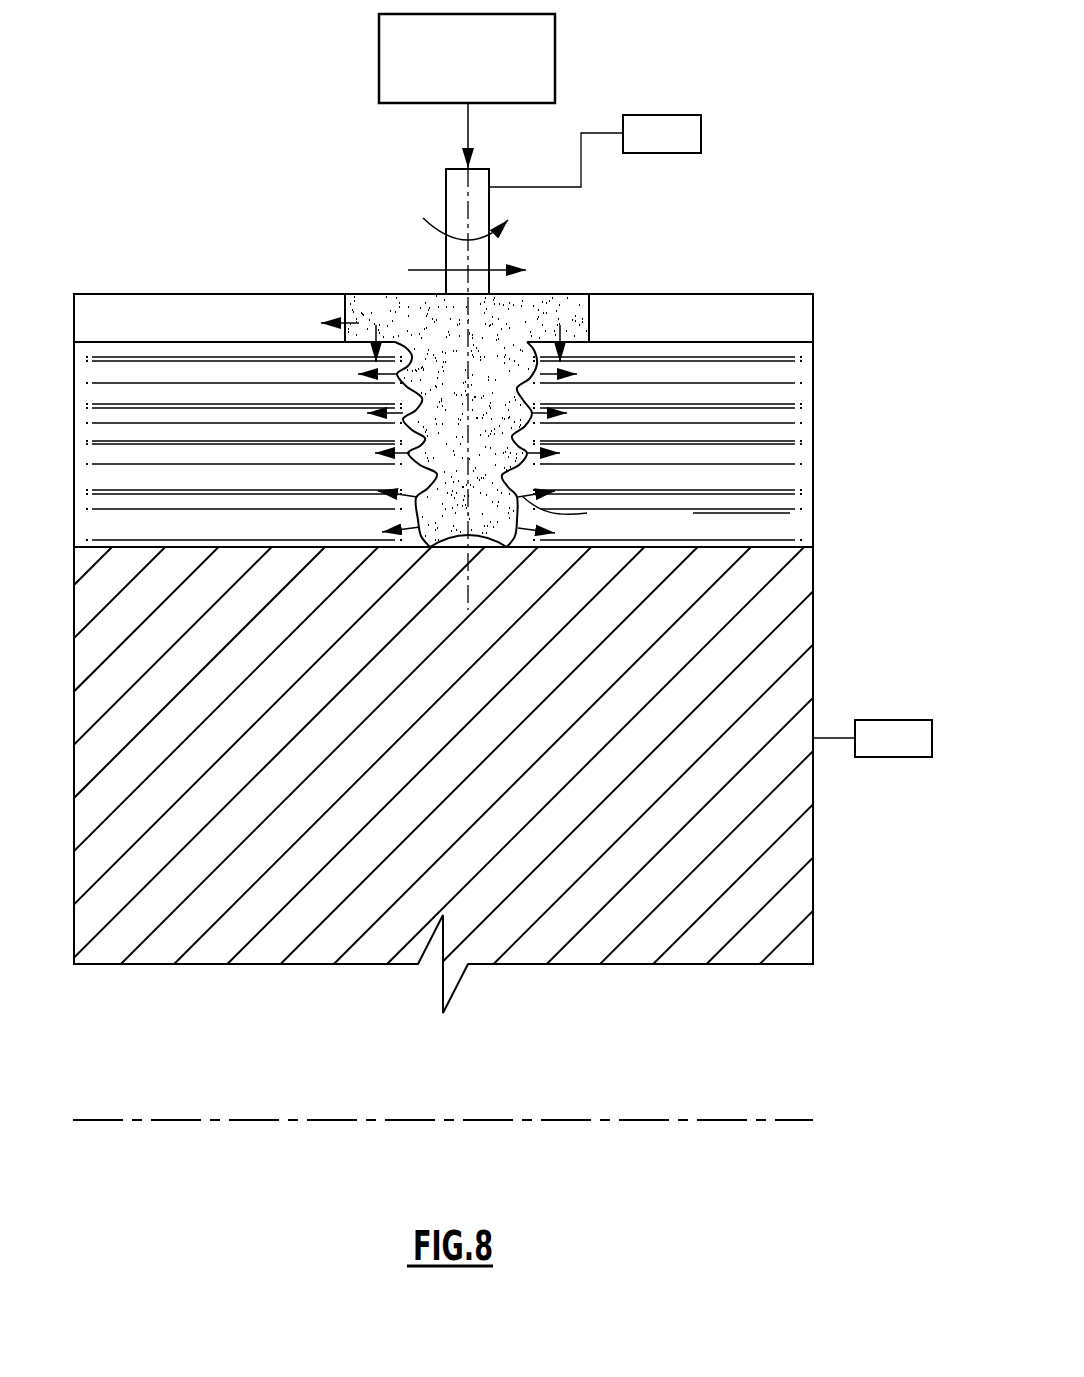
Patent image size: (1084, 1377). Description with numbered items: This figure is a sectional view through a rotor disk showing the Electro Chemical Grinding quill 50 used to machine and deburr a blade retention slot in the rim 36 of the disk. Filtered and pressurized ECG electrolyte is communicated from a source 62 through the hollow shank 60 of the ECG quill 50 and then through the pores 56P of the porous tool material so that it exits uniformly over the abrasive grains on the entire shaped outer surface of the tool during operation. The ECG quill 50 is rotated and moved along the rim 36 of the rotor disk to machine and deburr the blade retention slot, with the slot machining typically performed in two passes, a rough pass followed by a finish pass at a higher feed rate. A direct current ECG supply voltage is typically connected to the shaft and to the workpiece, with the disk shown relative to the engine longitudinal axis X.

The rim 36 is at (813, 630).
The ECG quill 50 is at (578, 270).
The pores 56P is at (385, 300).
The hollow shank section 60 is at (490, 257).
The source 62 is at (555, 56).
The engine longitudinal axis X is at (566, 1120).